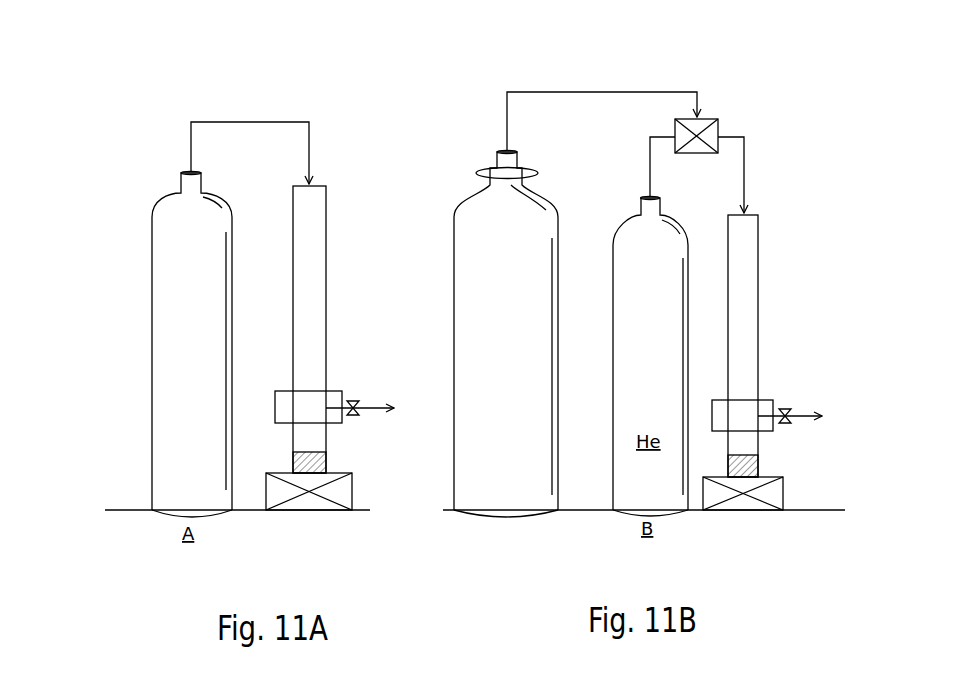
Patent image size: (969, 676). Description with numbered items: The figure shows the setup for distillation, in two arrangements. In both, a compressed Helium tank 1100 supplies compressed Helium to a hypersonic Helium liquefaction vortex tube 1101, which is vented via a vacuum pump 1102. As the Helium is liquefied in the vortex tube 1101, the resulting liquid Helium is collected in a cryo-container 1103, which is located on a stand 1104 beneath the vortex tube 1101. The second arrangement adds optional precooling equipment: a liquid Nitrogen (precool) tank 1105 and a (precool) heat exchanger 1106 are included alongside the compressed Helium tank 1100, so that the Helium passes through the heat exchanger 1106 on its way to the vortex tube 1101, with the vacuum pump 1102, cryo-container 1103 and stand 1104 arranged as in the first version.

In FIG. 11A, the compressed Helium tank 1100 is at (164, 378).
In FIG. 11A, the hypersonic Helium liquefaction vortex tube 1101 is at (315, 200).
In FIG. 11B, the hypersonic Helium liquefaction vortex tube 1101 is at (752, 285).
In FIG. 11A, the vacuum pump 1102 is at (308, 402).
In FIG. 11B, the vacuum pump 1102 is at (748, 415).
In FIG. 11A, the cryo-container 1103 is at (290, 462).
In FIG. 11B, the cryo-container 1103 is at (762, 465).
In FIG. 11A, the stand 1104 is at (306, 505).
In FIG. 11B, the stand 1104 is at (742, 502).
In FIG. 11B, the liquid Nitrogen (precool) tank 1105 is at (466, 240).
In FIG. 11B, the (precool) heat exchanger 1106 is at (716, 130).